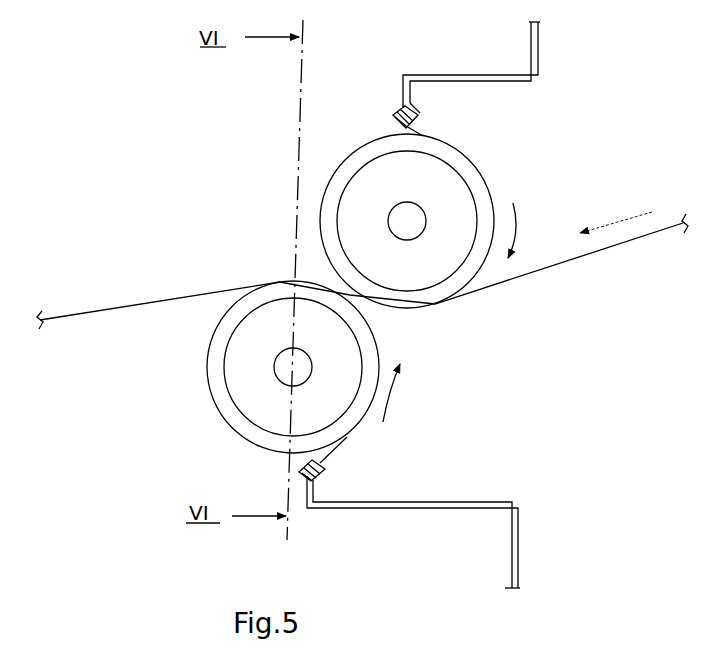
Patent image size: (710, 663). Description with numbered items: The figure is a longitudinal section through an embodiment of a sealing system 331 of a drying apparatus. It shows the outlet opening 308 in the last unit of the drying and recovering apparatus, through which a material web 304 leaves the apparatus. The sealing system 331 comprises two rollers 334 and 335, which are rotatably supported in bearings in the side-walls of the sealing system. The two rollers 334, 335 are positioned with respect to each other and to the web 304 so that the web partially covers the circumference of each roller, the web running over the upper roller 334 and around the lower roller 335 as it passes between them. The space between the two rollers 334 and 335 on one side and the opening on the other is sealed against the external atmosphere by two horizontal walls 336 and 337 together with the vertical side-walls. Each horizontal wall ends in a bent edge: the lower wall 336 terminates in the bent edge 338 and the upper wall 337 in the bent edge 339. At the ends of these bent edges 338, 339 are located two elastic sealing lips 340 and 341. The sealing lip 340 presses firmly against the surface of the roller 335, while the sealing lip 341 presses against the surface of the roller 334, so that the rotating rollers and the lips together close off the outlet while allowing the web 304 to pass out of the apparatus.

The material web 304 is at (525, 271).
The outlet opening 308 is at (550, 369).
The sealing system 331 is at (423, 380).
The roller 334 is at (454, 190).
The roller 335 is at (229, 346).
The horizontal wall 336 is at (432, 512).
The horizontal wall 337 is at (469, 80).
The bent edge 338 is at (316, 493).
The bent edge 339 is at (403, 92).
The elastic sealing lip 340 is at (335, 450).
The elastic sealing lip 341 is at (423, 137).